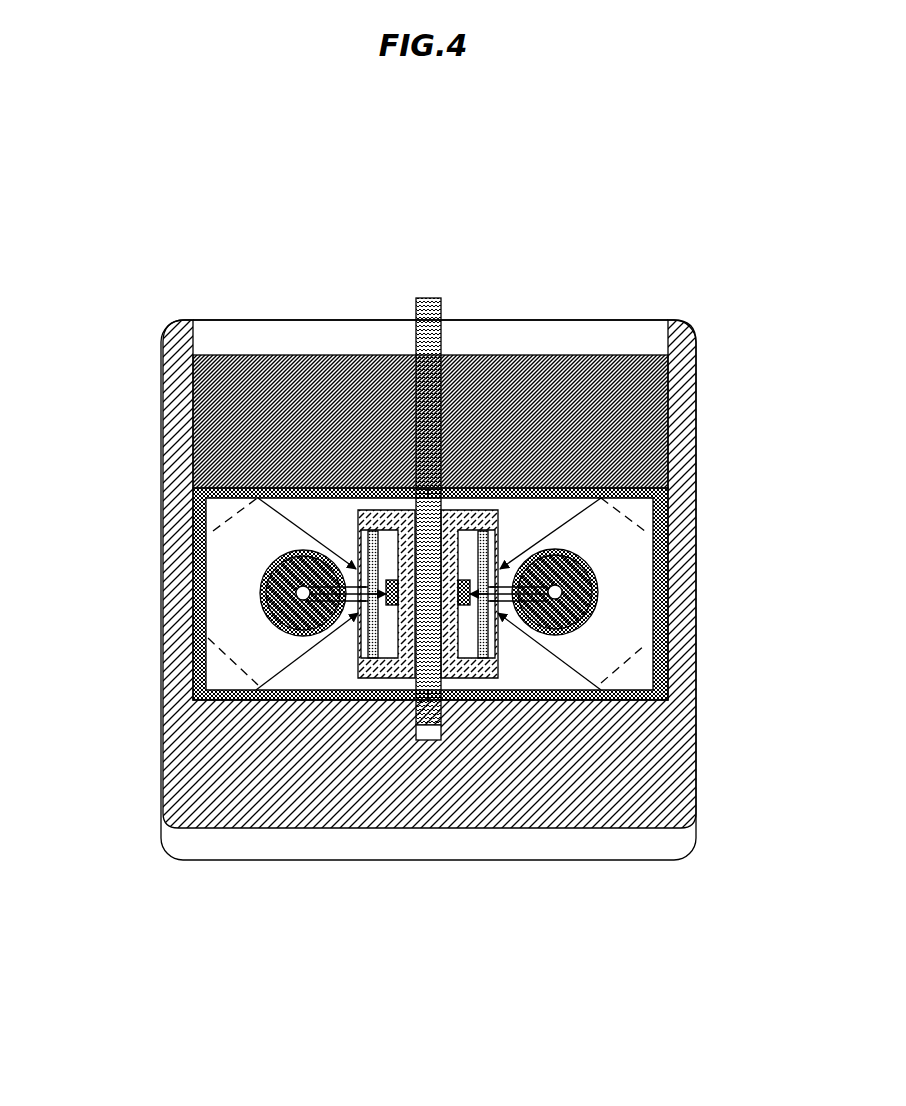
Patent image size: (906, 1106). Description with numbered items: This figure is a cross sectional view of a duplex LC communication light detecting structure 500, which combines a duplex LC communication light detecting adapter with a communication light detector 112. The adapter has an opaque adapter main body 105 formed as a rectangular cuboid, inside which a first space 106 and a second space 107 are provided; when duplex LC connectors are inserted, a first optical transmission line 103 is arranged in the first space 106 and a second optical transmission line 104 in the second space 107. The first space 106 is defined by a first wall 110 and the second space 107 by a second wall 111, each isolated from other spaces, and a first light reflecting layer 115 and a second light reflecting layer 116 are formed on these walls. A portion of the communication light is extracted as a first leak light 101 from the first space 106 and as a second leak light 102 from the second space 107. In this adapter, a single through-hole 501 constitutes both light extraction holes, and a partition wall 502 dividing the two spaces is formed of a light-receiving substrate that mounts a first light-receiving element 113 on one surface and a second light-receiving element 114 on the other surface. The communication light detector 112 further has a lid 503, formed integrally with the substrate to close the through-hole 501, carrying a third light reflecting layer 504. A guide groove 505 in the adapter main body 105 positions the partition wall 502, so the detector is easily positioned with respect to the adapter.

The duplex LC communication light detecting structure 500 is at (145, 326).
The through-hole 501 is at (188, 345).
The partition wall 502 is at (420, 290).
The lid 503 is at (237, 346).
The third light reflecting layer 504 is at (200, 522).
The guide groove 505 is at (420, 732).
The first leak light 101 is at (343, 560).
The second leak light 102 is at (527, 517).
The first optical transmission line 103 is at (293, 590).
The second optical transmission line 104 is at (547, 590).
The adapter main body 105 is at (688, 735).
The first space 106 is at (200, 630).
The second space 107 is at (650, 622).
The first wall 110 is at (192, 670).
The second wall 111 is at (652, 660).
The communication light detector 112 is at (580, 330).
The first light-receiving element 113 is at (381, 572).
The second light-receiving element 114 is at (464, 572).
The first light reflecting layer 115 is at (370, 692).
The second light reflecting layer 116 is at (455, 692).